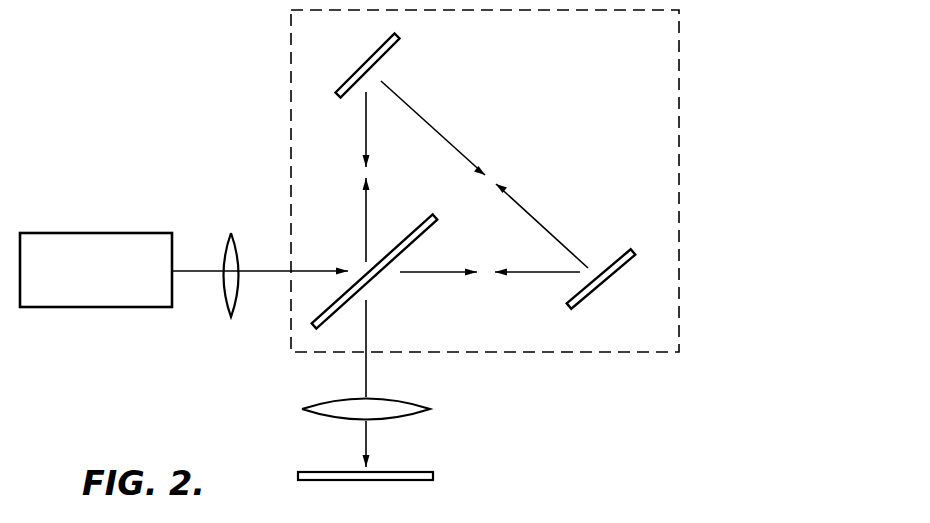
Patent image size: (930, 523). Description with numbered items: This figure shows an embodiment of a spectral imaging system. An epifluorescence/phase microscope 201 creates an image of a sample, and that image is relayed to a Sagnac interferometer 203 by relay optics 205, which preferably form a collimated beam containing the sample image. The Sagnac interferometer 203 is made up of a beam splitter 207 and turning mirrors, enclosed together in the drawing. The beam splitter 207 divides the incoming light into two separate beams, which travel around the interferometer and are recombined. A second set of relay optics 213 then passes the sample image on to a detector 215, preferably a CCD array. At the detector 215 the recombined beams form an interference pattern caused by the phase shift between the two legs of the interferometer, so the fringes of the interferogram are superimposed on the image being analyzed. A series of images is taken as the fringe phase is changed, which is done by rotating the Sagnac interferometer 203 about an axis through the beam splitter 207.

The epifluorescence/phase microscope 201 is at (137, 233).
The Sagnac interferometer 203 is at (688, 35).
The relay optics 205 is at (232, 242).
The beam splitter 207 is at (436, 218).
The second set of relay optics 213 is at (428, 410).
The detector 215 is at (432, 473).